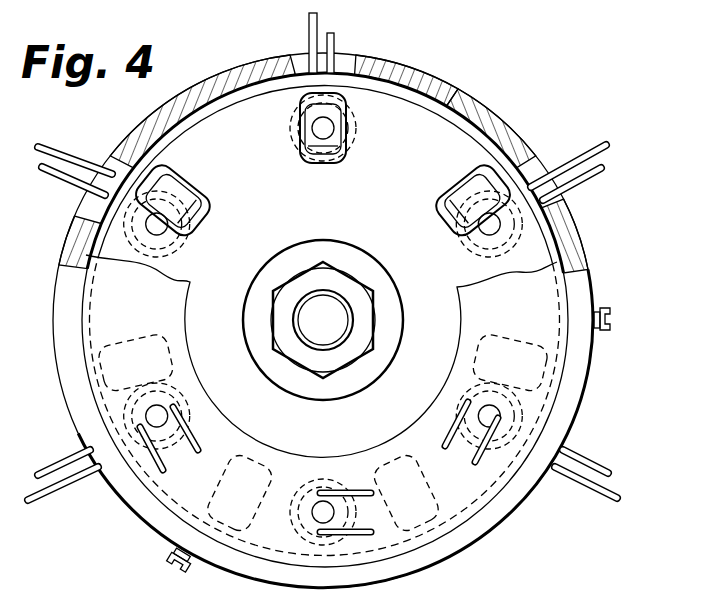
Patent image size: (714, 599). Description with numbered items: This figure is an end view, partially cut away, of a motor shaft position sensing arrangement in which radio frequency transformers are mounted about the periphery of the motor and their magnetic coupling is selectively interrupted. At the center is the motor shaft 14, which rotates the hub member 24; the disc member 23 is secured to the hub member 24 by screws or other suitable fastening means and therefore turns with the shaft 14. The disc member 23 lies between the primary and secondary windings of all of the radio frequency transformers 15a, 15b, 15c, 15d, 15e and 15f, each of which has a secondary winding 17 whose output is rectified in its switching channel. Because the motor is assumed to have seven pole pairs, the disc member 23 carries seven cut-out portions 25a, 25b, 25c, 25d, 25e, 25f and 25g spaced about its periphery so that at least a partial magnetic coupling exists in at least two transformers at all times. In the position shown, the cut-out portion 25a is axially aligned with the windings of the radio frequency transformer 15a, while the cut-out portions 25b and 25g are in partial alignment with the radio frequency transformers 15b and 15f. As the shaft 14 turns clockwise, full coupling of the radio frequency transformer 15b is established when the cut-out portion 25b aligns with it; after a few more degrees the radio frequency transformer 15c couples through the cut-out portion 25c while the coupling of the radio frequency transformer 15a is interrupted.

The shaft 14 is at (330, 335).
The radio frequency transformer 15a is at (331, 157).
The radio frequency transformer 15b is at (473, 200).
The radio frequency transformer 15c is at (471, 445).
The radio frequency transformer 15d is at (300, 506).
The radio frequency transformer 15e is at (187, 455).
The radio frequency transformer 15f is at (156, 219).
The secondary winding 17 is at (335, 117).
The disc member 23 is at (536, 248).
The hub member 24 is at (380, 354).
The cut-out portion 25a is at (326, 165).
The cut-out portion 25b is at (452, 205).
The cut-out portion 25c is at (538, 350).
The cut-out portion 25d is at (420, 480).
The cut-out portion 25e is at (260, 478).
The cut-out portion 25f is at (137, 343).
The cut-out portion 25g is at (175, 188).